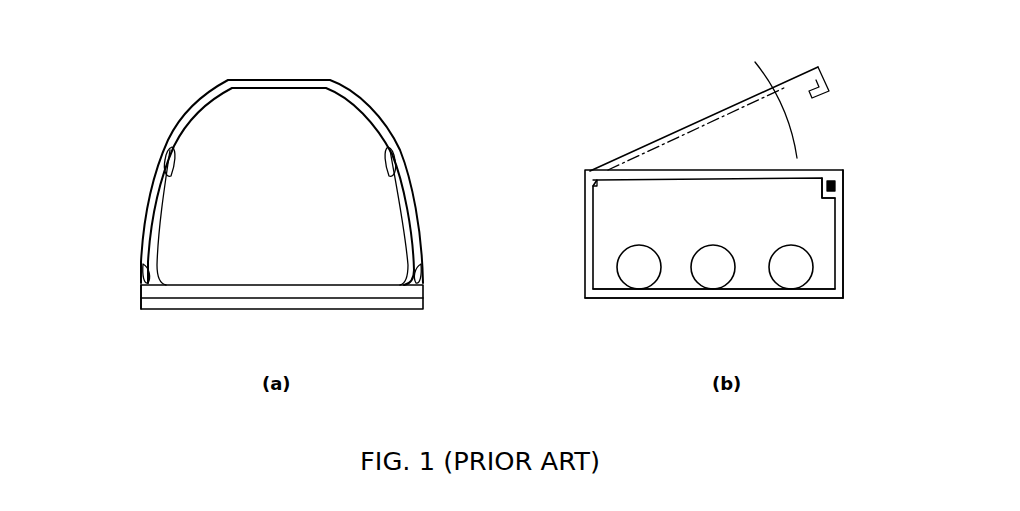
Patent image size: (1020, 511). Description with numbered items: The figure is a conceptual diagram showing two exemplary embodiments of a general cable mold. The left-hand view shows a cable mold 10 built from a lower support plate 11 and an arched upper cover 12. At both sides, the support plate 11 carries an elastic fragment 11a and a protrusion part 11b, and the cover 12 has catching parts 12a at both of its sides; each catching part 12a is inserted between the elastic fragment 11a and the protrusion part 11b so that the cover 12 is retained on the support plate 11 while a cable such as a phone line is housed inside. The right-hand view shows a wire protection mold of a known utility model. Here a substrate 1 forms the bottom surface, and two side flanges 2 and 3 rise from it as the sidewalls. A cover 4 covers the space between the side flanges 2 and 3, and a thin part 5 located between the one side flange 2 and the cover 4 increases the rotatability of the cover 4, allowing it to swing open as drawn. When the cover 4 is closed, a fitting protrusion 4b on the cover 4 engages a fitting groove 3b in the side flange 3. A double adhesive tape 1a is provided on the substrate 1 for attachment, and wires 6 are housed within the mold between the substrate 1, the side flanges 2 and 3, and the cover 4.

The substrate 1 is at (623, 291).
The double adhesive tape 1a is at (674, 291).
The side flange 2 is at (586, 238).
The side flange 3 is at (843, 256).
The fitting groove 3b is at (838, 195).
The cover 4 is at (816, 173).
The fitting protrusion 4b is at (840, 186).
The thin part 5 is at (592, 181).
The wire 6 is at (785, 278).
The cable mold 10 is at (270, 213).
The support plate 11 is at (322, 292).
The elastic fragment 11a is at (150, 160).
The protrusion part 11b is at (140, 288).
The cover 12 is at (332, 85).
The catching part 12a is at (150, 277).